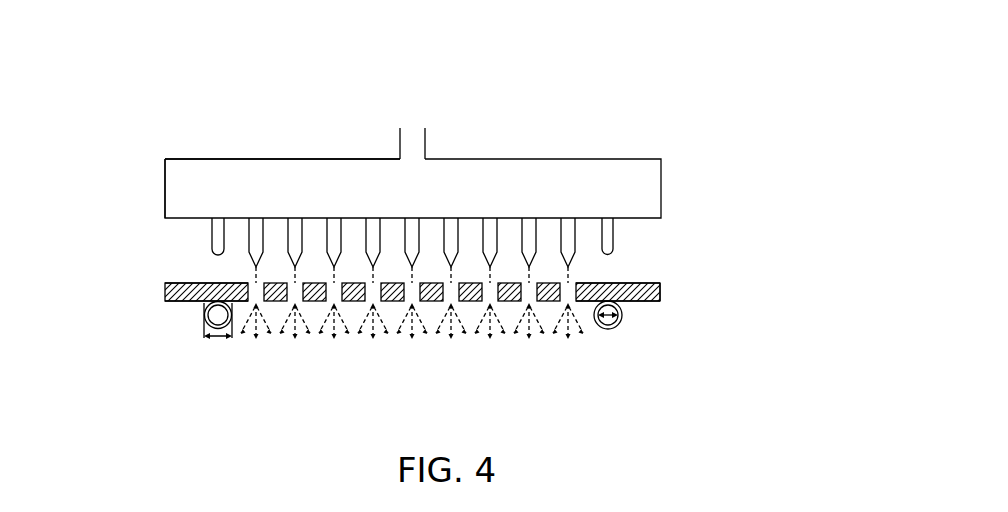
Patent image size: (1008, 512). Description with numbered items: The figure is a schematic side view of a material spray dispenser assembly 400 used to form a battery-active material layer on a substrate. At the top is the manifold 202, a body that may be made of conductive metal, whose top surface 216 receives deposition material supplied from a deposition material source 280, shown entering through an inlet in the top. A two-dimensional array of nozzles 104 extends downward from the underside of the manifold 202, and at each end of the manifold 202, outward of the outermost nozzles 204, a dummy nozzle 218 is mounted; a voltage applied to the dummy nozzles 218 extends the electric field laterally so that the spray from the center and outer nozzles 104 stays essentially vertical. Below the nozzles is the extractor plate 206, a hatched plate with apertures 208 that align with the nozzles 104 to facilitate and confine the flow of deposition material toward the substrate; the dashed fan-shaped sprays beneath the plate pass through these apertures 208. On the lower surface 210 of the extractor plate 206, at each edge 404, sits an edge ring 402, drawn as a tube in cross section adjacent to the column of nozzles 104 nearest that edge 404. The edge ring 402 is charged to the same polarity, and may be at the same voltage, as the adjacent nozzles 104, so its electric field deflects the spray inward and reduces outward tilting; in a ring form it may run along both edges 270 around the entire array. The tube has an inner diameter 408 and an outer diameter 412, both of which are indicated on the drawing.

The material spray dispenser assembly 400 is at (601, 86).
The manifold 202 is at (432, 200).
The top surface 216 is at (288, 158).
The edges 270 is at (165, 175).
The deposition material source 280 is at (413, 136).
The dummy nozzles 218 is at (210, 243).
The nozzles 104 is at (580, 249).
The outermost nozzles 204 is at (393, 250).
The extractor plate 206 is at (662, 289).
The edge 404 is at (167, 301).
The lower surface 210 is at (178, 302).
The apertures 208 is at (571, 302).
The edge ring 402 is at (206, 322).
The inner diameter 408 is at (609, 320).
The outer diameter 412 is at (218, 340).